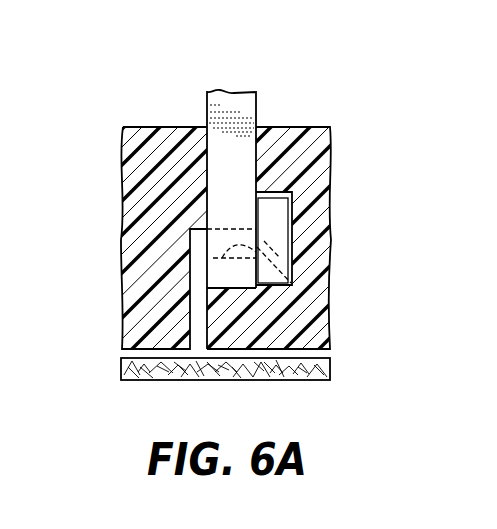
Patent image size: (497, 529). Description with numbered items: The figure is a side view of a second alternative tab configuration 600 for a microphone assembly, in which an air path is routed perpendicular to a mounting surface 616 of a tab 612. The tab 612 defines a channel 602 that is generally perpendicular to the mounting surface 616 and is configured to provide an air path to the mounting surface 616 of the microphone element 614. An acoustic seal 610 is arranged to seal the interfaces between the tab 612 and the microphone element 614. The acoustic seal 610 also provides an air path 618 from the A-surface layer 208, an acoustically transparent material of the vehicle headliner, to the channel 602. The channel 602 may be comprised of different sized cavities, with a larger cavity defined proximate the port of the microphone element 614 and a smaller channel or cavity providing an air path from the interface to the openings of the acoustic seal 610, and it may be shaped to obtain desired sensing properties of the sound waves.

The second alternative tab configuration 600 is at (167, 87).
The acoustic seal 610 is at (123, 247).
The tab 612 is at (205, 157).
The microphone element 614 is at (293, 236).
The mounting surface 616 is at (256, 212).
The channel 602 is at (331, 317).
The A-surface layer 208 is at (120, 373).
The air path 618 is at (145, 383).